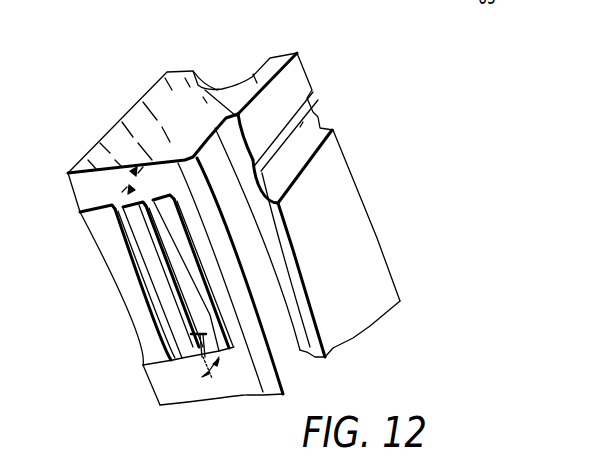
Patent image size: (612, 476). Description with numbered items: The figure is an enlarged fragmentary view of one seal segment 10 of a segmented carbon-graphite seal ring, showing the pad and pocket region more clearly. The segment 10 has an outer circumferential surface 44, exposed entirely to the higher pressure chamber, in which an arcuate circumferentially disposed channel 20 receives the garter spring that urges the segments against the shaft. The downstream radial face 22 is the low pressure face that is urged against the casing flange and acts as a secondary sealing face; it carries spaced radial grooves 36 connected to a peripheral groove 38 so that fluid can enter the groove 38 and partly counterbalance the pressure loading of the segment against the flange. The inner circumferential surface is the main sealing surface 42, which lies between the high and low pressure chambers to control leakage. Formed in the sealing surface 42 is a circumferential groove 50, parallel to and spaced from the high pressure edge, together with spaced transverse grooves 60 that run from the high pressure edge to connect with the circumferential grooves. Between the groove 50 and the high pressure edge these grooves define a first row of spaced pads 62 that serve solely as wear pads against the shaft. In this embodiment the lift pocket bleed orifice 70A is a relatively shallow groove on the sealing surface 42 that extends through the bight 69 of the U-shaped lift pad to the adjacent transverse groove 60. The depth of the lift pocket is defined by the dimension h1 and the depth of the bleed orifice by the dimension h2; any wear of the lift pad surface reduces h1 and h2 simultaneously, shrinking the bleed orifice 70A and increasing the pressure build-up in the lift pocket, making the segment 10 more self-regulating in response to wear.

The seal segment 10 is at (394, 238).
The channel 20 is at (200, 80).
The downstream face 22 is at (328, 177).
The radial grooves 36 is at (316, 118).
The peripheral groove 38 is at (308, 352).
The sealing surface 42 is at (93, 183).
The outer circumferential surface 44 is at (308, 77).
The circumferential groove 50 is at (152, 303).
The transverse grooves 60 is at (167, 388).
The wear pads 62 is at (100, 232).
The bight 69 is at (213, 354).
The bleed orifice 70A is at (200, 352).
The depth of the lift pocket h1 is at (135, 170).
The depth of the bleed orifice h2 is at (212, 376).